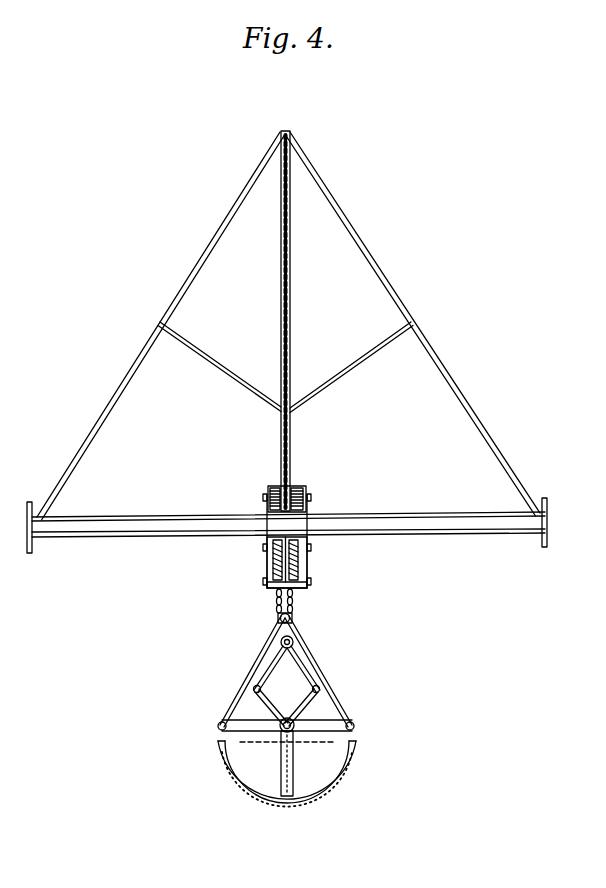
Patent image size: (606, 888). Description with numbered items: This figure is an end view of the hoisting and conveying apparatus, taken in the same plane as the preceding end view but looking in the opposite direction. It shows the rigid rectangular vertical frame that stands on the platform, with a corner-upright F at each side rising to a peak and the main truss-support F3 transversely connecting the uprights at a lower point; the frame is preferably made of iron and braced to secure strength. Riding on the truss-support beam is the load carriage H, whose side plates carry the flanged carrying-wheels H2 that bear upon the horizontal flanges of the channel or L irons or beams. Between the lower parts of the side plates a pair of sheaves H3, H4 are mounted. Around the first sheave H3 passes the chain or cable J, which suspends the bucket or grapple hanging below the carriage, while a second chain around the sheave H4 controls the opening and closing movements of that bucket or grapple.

The corner-upright F is at (30, 501).
The main truss-support F3 is at (428, 524).
The load carriage H is at (292, 524).
The flanged carrying-wheel H2 is at (268, 490).
The sheave H3 is at (298, 568).
The sheave H4 is at (273, 566).
The chain or cable J is at (276, 597).